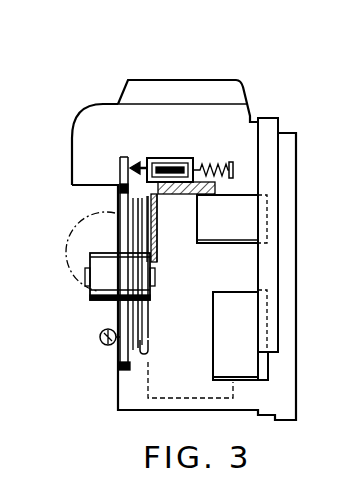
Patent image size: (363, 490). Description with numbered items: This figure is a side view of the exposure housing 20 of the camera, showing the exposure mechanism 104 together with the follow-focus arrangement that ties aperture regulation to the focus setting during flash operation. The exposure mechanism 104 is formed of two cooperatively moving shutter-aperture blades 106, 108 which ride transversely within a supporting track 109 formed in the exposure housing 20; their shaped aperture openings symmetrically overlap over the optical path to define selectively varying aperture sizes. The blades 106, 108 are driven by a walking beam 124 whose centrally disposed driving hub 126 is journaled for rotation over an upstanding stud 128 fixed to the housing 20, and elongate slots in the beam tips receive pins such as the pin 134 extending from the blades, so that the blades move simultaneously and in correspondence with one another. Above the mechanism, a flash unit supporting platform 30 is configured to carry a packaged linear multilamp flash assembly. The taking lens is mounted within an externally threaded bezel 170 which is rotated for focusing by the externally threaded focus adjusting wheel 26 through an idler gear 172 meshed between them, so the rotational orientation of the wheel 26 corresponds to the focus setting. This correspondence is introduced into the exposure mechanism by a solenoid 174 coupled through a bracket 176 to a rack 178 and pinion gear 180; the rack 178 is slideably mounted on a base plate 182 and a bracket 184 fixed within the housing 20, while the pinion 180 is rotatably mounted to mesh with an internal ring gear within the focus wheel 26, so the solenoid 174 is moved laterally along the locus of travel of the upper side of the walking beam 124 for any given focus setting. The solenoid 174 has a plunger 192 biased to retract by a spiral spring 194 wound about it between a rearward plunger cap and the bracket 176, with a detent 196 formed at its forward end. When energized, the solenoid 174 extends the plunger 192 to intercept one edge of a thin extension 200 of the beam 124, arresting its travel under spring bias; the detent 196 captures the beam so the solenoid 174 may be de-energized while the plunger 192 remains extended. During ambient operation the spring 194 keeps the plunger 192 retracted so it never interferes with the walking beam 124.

The exposure housing 20 is at (243, 79).
The flash unit supporting platform 30 is at (160, 80).
The focus adjusting wheel 26 is at (267, 127).
The exposure mechanism 104 is at (87, 343).
The shutter-aperture blade 106 is at (147, 323).
The shutter-aperture blade 108 is at (148, 302).
The supporting track 109 is at (149, 344).
The walking beam 124 is at (119, 198).
The driving hub 126 is at (95, 300).
The upstanding stud 128 is at (87, 276).
The pin 134 is at (120, 222).
The bezel 170 is at (185, 398).
The idler gear 172 is at (269, 368).
The solenoid 174 is at (168, 158).
The bracket 176 is at (206, 164).
The rack 178 is at (196, 195).
The pinion gear 180 is at (216, 243).
The base plate 182 is at (152, 245).
The bracket 184 is at (190, 198).
The plunger 192 is at (143, 162).
The spiral spring 194 is at (228, 163).
The detent 196 is at (136, 165).
The thin extension 200 is at (126, 184).